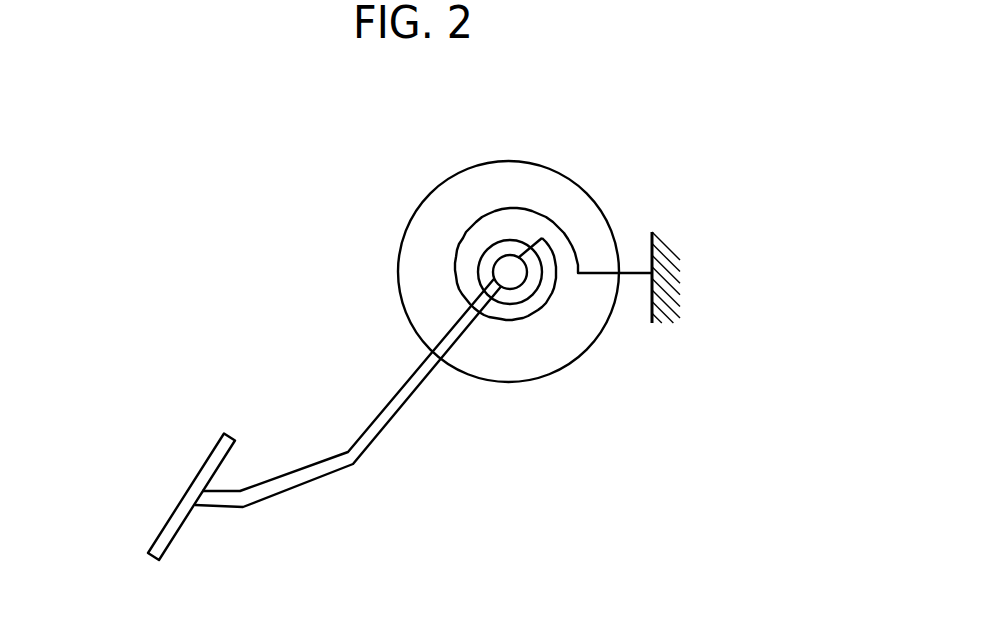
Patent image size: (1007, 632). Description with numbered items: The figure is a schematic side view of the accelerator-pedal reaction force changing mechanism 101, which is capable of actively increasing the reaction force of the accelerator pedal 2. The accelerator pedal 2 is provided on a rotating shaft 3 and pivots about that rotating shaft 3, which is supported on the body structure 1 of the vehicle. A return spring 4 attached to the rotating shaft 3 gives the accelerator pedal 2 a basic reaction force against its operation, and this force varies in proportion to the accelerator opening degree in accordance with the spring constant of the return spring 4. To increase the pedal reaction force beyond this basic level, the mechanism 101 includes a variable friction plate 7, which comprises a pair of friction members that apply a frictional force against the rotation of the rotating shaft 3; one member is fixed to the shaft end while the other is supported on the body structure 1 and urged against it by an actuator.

The accelerator-pedal reaction force changing mechanism 101 is at (613, 130).
The variable friction plate 7 is at (405, 206).
The return spring 4 is at (507, 208).
The rotating shaft 3 is at (510, 272).
The body structure 1 is at (673, 247).
The accelerator pedal 2 is at (152, 507).